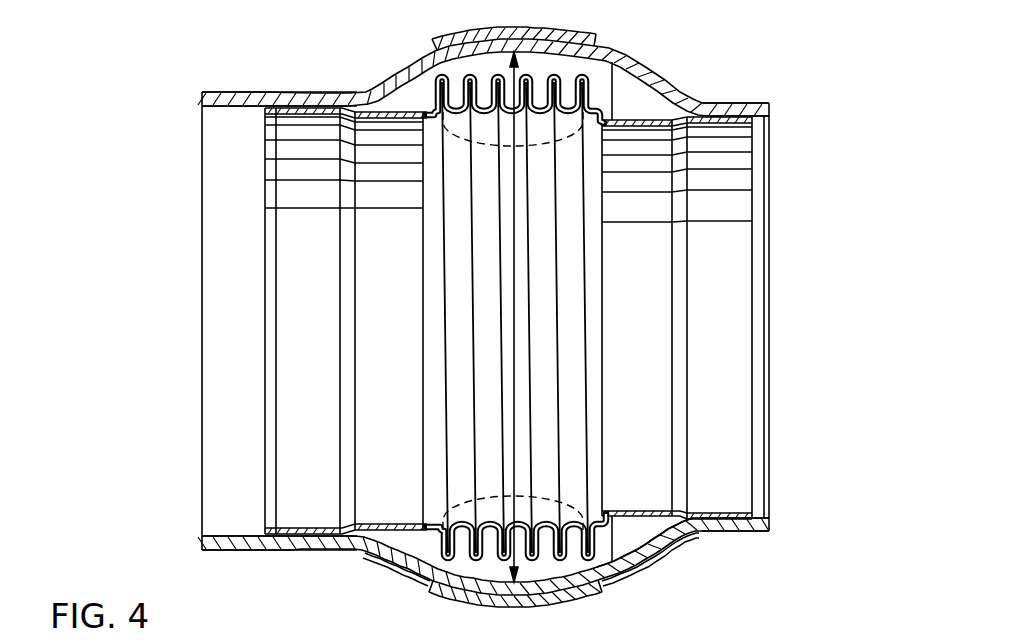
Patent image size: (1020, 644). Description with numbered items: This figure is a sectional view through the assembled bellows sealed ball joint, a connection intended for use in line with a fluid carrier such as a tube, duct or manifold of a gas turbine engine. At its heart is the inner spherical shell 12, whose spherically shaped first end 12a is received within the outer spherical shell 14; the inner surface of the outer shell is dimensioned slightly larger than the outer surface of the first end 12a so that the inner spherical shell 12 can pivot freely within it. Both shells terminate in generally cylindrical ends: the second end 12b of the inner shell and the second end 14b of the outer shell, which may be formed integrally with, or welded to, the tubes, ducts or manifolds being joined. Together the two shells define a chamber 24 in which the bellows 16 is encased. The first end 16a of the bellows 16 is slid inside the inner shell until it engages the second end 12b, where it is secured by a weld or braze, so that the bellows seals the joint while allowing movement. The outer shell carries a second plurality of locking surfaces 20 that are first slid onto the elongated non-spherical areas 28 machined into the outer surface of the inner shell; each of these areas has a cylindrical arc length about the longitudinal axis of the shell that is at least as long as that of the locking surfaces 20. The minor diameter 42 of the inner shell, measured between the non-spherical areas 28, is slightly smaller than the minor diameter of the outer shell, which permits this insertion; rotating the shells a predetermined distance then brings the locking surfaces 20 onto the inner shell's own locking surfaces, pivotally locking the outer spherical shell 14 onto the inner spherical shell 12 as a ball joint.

The inner spherical shell 12 is at (392, 566).
The first end of inner spherical shell 12a is at (607, 546).
The second end of inner spherical shell 12b is at (233, 91).
The outer spherical shell 14 is at (590, 594).
The second end of outer spherical shell 14b is at (753, 532).
The bellows 16 is at (697, 533).
The first end of bellows 16a is at (295, 527).
The second plurality of locking surfaces 20 is at (464, 34).
The chamber 24 is at (650, 90).
The elongated non-spherical areas 28 is at (518, 27).
The minor diameter of inner spherical shell 42 is at (513, 327).